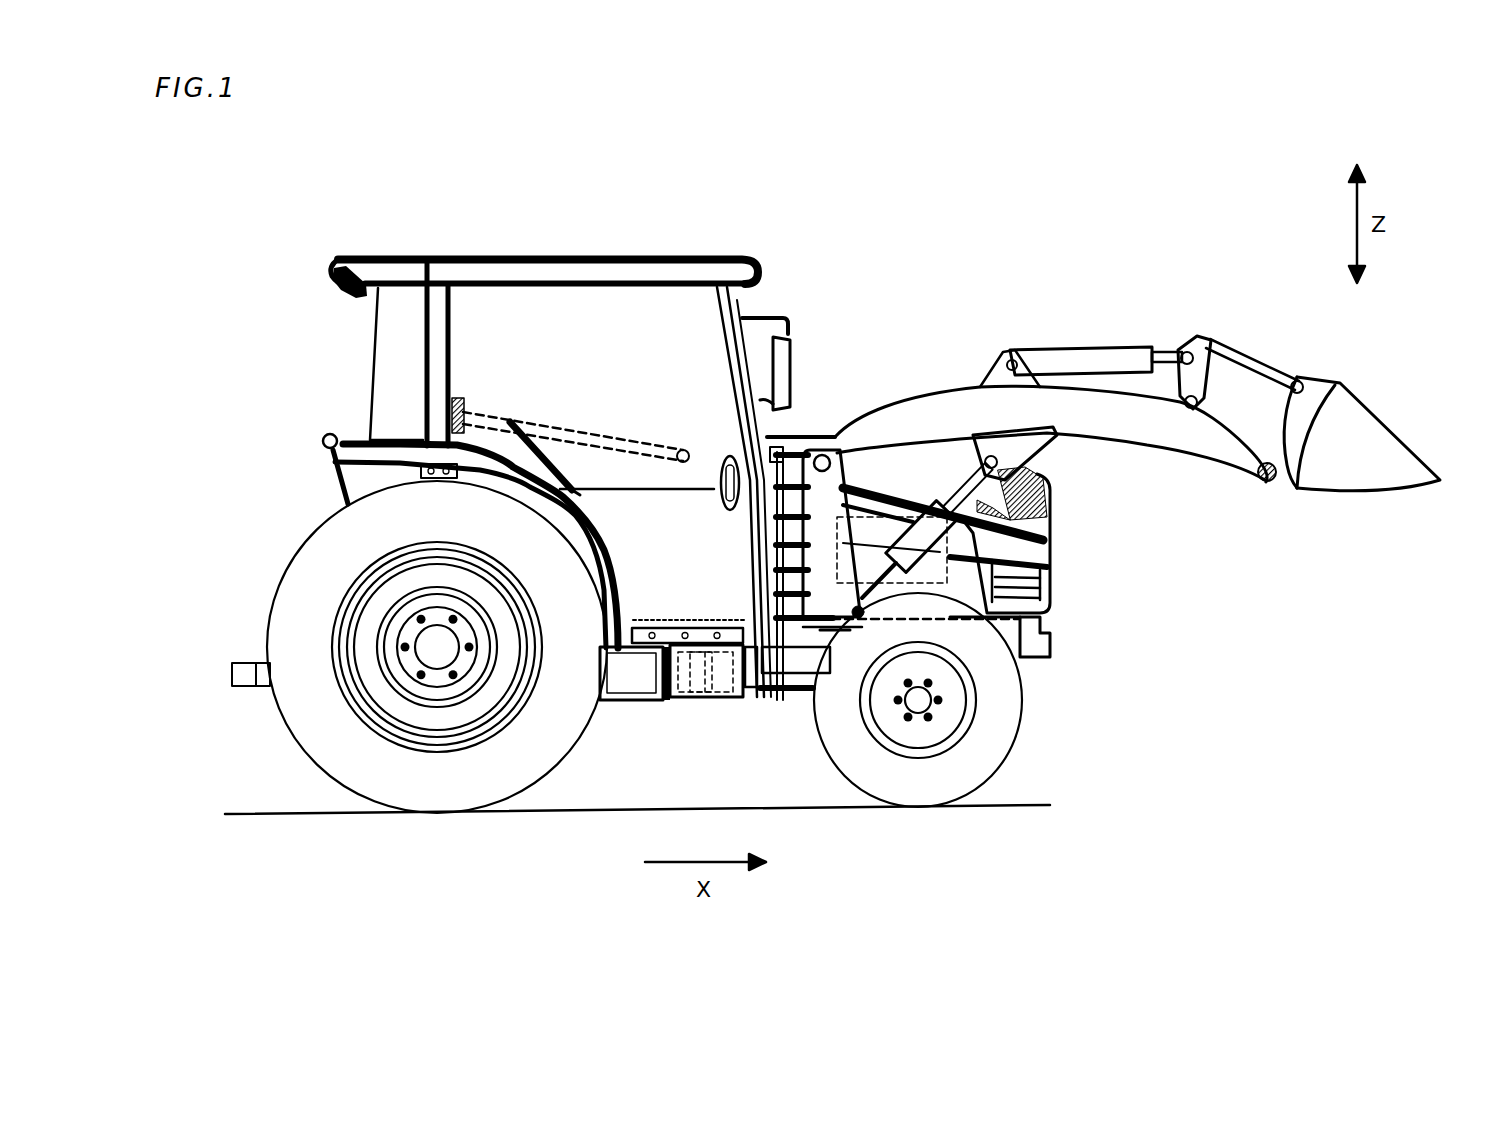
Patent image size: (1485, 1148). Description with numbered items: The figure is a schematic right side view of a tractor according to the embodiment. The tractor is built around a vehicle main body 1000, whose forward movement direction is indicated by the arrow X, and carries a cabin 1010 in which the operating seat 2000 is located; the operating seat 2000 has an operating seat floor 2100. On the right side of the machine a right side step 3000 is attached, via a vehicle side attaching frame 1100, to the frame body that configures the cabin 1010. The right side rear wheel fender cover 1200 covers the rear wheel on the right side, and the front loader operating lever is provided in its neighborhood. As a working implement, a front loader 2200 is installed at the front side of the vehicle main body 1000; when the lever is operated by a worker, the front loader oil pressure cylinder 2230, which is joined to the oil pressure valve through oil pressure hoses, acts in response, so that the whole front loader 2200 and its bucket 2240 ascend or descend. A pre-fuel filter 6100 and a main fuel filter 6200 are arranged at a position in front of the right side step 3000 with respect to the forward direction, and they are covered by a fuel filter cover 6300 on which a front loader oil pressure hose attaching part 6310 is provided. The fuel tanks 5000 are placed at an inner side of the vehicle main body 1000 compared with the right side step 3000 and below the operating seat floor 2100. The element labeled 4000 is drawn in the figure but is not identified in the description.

The vehicle main body 1000 is at (836, 533).
The cabin 1010 is at (455, 335).
The vehicle side attaching frame 1100 is at (690, 620).
The right side rear wheel fender cover 1200 is at (467, 421).
The operating seat 2000 is at (560, 479).
The operating seat floor 2100 is at (688, 620).
The front loader 2200 is at (1121, 440).
The front loader oil pressure cylinder 2230 is at (933, 440).
The bucket 2240 is at (1315, 495).
The right side step 3000 is at (618, 803).
The engine hood 4000 is at (1013, 527).
The fuel tanks 5000 is at (605, 676).
The pre-fuel filter 6100 is at (688, 700).
The main fuel filter 6200 is at (730, 700).
The fuel filter cover 6300 is at (693, 700).
The front loader oil pressure hose attaching part 6310 is at (753, 693).